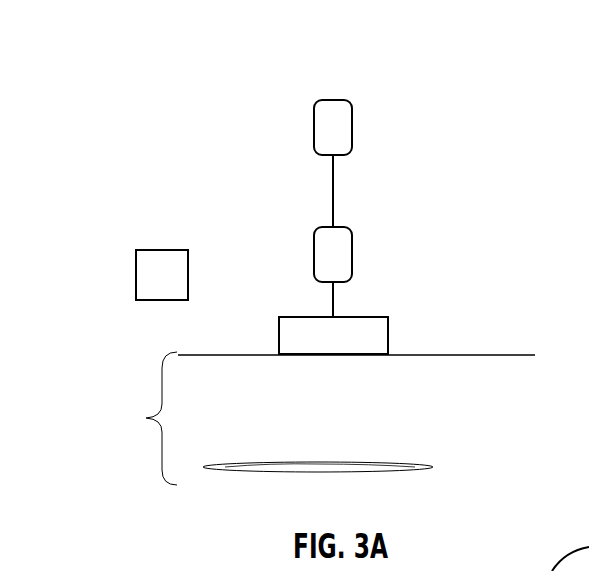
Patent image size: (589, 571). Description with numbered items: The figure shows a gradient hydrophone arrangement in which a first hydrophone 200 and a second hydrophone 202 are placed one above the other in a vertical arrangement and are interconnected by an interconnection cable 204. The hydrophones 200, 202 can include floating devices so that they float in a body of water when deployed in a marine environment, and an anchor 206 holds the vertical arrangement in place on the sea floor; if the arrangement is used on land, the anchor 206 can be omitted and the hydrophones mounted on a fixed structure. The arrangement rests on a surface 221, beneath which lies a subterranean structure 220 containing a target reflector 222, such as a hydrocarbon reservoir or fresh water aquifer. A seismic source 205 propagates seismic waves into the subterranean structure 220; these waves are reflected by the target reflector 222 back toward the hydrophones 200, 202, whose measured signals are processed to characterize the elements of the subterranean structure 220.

The first hydrophone 200 is at (364, 120).
The second hydrophone 202 is at (361, 247).
The interconnection cable 204 is at (344, 200).
The seismic source 205 is at (129, 253).
The anchor 206 is at (382, 323).
The subterranean structure 220 is at (142, 418).
The surface 221 is at (378, 333).
The target reflector 222 is at (318, 448).